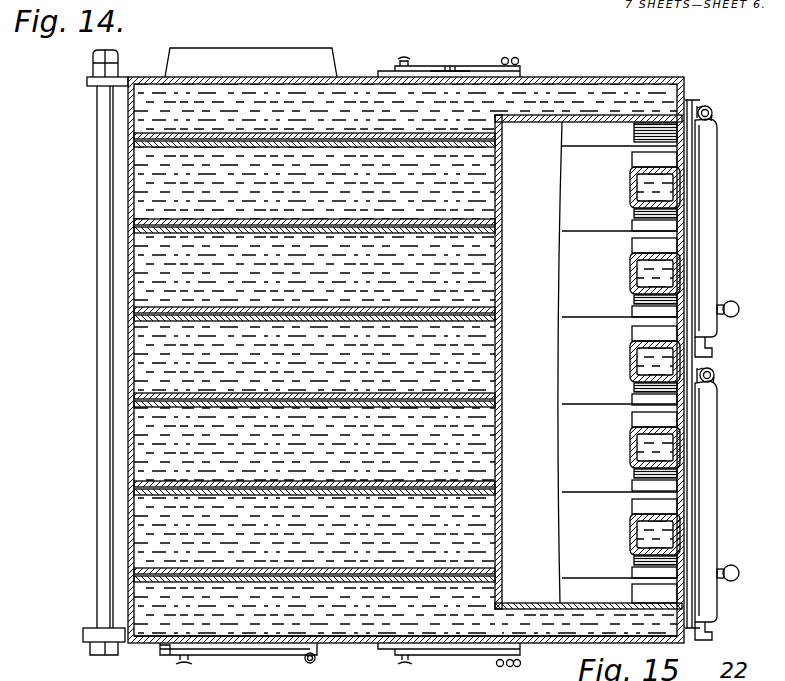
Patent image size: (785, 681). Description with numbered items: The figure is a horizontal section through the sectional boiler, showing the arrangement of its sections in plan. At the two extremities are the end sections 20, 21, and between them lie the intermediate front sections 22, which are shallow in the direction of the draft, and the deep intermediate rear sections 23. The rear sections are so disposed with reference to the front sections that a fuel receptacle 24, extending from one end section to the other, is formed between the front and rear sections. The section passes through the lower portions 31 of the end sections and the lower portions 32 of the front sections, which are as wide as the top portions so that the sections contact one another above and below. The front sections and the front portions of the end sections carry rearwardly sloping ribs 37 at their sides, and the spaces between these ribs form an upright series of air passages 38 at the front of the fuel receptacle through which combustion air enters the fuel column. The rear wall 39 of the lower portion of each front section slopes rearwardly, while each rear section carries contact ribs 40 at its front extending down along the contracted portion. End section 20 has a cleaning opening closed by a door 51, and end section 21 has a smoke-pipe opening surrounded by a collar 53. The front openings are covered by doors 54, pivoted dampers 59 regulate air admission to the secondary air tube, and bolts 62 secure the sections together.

The end section 20 is at (354, 644).
The end section 21 is at (648, 75).
The intermediate front section 22 is at (632, 361).
The intermediate rear section 23 is at (128, 316).
The fuel receptacle 24 is at (530, 362).
The lower portion of end section 31 is at (562, 136).
The lower portion of front section 32 is at (560, 162).
The rib 37 is at (640, 238).
The air passage 38 is at (683, 290).
The rear wall 39 is at (638, 377).
The contact rib 40 is at (500, 321).
The door 51 is at (266, 648).
The collar 53 is at (251, 62).
The door 54 is at (706, 296).
The pivoted damper 59 is at (468, 73).
The bolt 62 is at (98, 589).